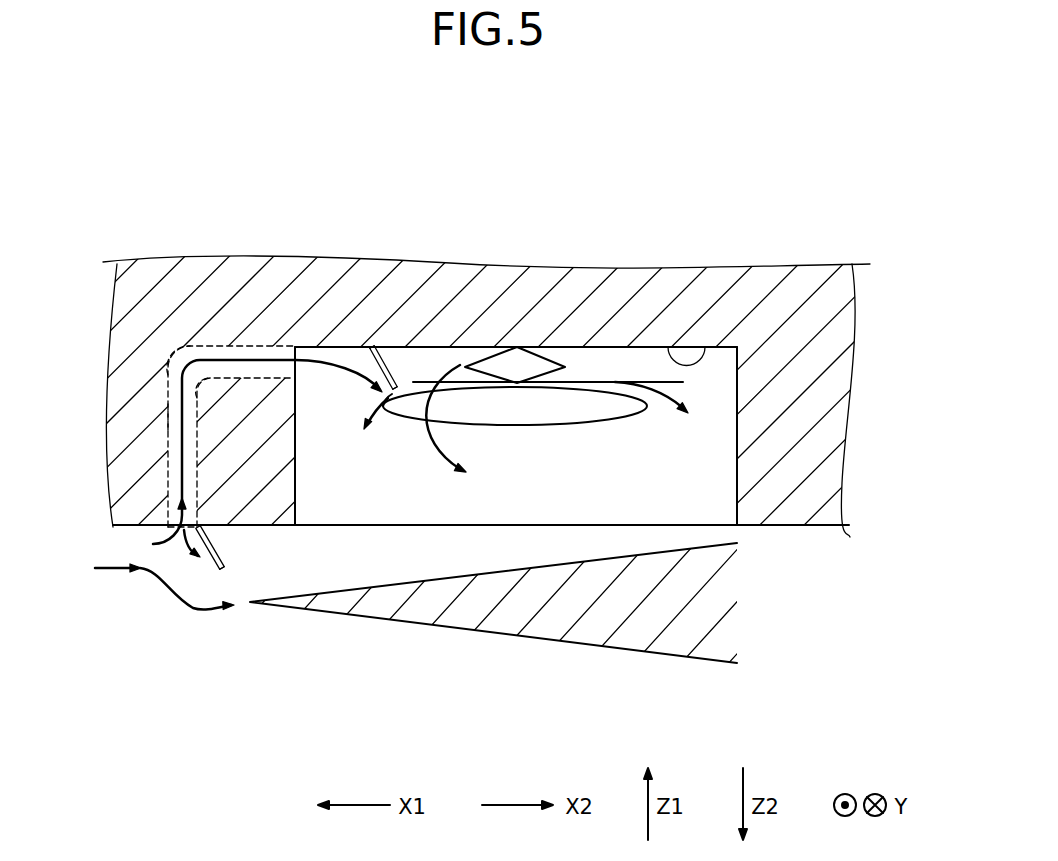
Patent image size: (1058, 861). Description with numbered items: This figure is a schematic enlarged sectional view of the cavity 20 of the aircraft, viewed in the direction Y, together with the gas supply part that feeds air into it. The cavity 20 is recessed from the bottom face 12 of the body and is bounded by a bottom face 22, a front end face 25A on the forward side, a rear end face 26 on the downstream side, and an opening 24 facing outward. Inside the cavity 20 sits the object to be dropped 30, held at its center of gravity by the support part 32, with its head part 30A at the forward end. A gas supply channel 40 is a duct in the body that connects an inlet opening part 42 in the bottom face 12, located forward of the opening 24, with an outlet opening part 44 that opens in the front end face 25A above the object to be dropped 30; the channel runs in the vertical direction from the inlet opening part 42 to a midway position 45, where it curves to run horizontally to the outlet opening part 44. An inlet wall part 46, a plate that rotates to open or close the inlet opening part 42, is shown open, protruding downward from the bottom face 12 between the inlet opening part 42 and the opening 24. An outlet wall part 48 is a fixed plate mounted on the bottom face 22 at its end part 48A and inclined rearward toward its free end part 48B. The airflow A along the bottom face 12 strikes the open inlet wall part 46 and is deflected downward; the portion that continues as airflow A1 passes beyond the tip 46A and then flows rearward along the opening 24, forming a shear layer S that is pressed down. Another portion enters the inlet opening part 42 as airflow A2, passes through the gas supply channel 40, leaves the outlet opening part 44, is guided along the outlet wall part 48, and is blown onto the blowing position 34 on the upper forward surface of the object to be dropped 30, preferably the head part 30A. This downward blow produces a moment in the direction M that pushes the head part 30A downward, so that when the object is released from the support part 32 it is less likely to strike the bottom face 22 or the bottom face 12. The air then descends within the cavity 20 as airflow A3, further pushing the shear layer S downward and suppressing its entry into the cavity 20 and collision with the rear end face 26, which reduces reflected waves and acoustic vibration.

The bottom face 12 is at (243, 522).
The cavity 20 is at (585, 480).
The bottom face 22 is at (708, 346).
The opening 24 is at (476, 530).
The front end face 25A is at (297, 478).
The rear end face 26 is at (737, 490).
The object to be dropped 30 is at (570, 403).
The head part 30A is at (382, 404).
The support part 32 is at (517, 367).
The blowing position 34 is at (413, 382).
The gas supply channel 40 is at (167, 424).
The inlet opening part 42 is at (181, 530).
The outlet opening part 44 is at (298, 366).
The midway position 45 is at (184, 340).
The inlet wall part 46 is at (226, 556).
The tip 46A is at (222, 566).
The outlet wall part 48 is at (404, 385).
The end part 48A is at (373, 347).
The end part 48B is at (394, 398).
The shear layer S is at (677, 633).
The airflow A is at (108, 571).
The airflow A1 is at (186, 593).
The airflow A2 is at (265, 458).
The airflow A3 is at (527, 416).
The direction M is at (458, 425).